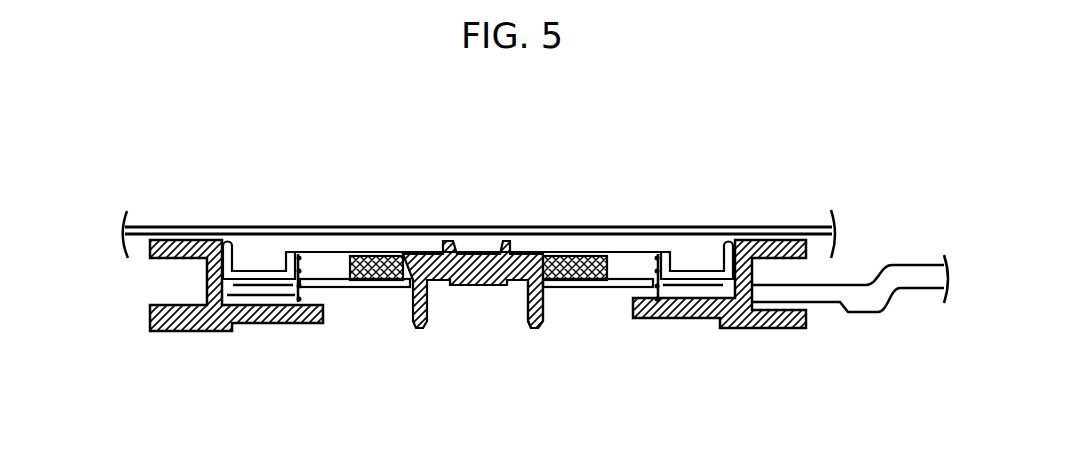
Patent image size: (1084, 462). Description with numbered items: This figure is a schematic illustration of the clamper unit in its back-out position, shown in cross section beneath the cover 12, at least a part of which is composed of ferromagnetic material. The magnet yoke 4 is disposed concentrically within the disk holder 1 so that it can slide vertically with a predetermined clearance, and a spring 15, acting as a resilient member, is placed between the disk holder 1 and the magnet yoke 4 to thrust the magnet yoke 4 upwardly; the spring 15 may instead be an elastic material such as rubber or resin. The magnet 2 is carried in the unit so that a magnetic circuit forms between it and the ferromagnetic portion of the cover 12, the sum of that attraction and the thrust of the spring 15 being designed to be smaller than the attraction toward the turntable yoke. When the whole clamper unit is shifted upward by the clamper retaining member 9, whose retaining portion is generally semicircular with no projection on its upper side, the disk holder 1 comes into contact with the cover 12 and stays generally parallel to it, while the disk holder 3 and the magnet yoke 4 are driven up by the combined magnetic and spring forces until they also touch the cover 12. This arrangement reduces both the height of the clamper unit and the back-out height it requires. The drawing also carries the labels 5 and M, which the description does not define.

The disk holder 1 is at (686, 312).
The magnet 2 is at (378, 256).
The disk holder 3 is at (528, 250).
The magnet yoke 4 is at (253, 278).
The substrate plate 5 is at (368, 288).
The clamper retaining member 9 is at (850, 300).
The cover 12 is at (667, 232).
The spring 15 is at (285, 305).
The mounting protrusion M is at (534, 305).